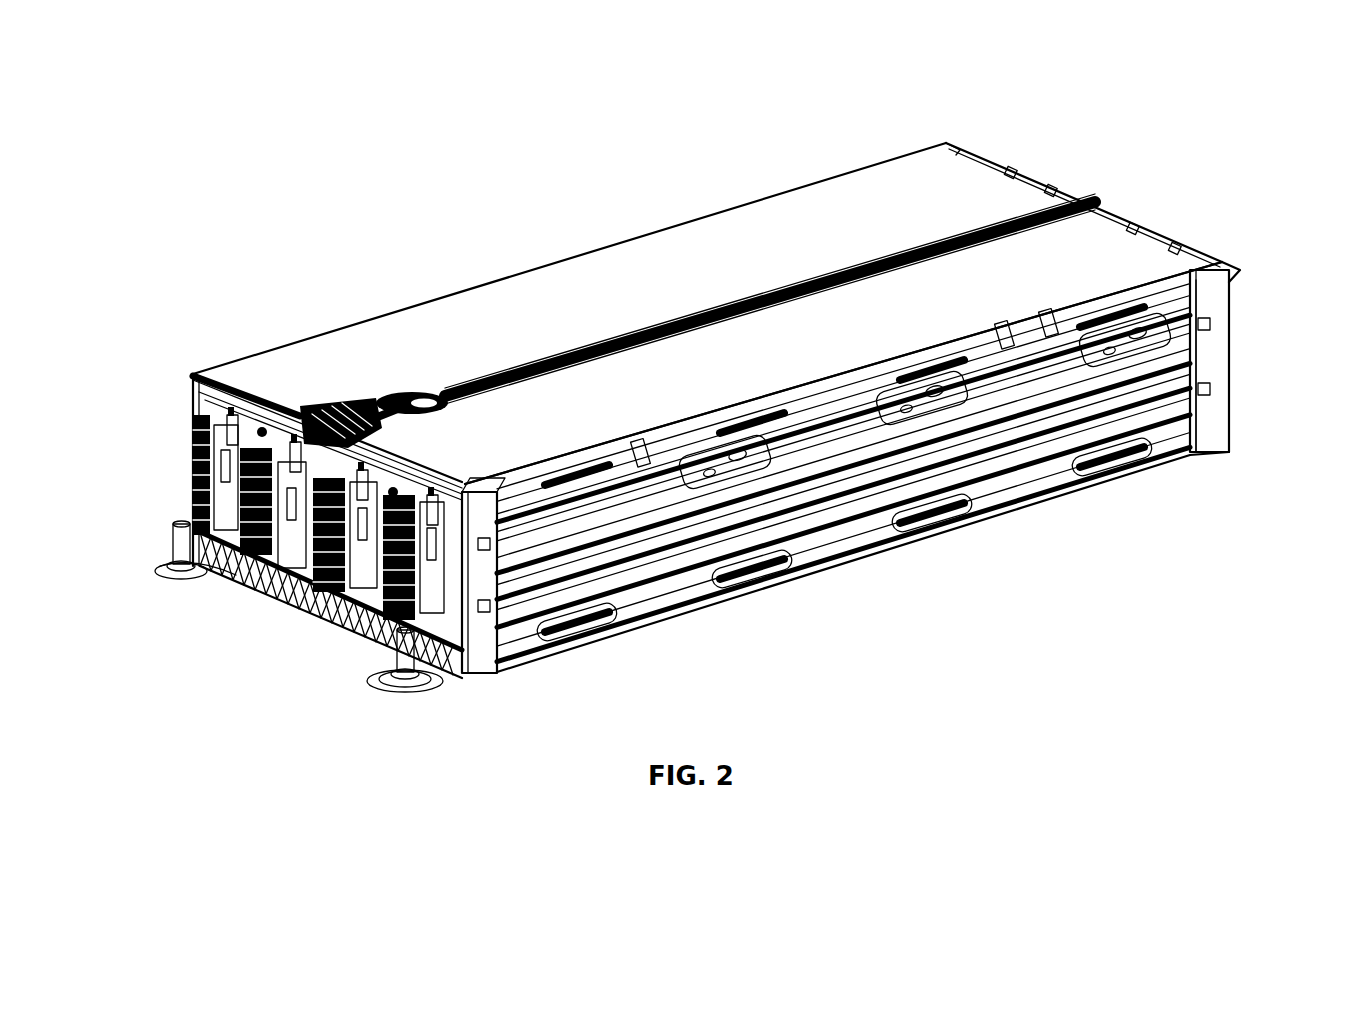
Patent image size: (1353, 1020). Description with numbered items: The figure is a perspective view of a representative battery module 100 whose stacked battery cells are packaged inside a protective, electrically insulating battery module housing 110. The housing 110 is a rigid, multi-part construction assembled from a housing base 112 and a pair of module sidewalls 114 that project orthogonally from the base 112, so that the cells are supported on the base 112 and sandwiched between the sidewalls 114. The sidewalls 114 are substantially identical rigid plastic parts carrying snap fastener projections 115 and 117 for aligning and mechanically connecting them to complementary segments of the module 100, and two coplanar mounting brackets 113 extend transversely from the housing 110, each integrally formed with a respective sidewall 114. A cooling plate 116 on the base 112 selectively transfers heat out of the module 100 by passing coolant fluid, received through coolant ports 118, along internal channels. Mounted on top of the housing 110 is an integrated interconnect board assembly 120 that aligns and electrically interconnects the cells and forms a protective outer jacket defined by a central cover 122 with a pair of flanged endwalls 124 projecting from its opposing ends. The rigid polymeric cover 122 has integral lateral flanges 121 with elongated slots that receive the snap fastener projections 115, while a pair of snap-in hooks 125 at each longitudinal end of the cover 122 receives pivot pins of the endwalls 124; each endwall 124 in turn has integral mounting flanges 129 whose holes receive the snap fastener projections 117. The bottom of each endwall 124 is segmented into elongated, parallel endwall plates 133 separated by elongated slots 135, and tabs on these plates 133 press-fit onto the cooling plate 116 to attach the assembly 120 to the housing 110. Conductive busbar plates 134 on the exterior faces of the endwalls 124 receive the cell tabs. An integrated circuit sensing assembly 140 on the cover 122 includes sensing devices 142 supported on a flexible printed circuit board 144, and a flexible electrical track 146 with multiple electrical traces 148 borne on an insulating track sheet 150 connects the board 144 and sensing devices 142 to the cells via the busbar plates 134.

The battery module 100 is at (302, 124).
The battery module housing 110 is at (1165, 530).
The housing base 112 is at (790, 567).
The mounting brackets 113 is at (1205, 290).
The module sidewalls 114 is at (1190, 455).
The snap fastener projections 115 is at (1100, 468).
The cooling plate 116 is at (385, 692).
The snap fastener projections 117 is at (1213, 385).
The coolant ports 118 is at (170, 545).
The integrated interconnect board (ICB) assembly 120 is at (612, 216).
The lateral flanges 121 is at (657, 490).
The central cover 122 is at (848, 200).
The flanged endwalls 124 is at (995, 165).
The snap-in hooks 125 is at (225, 408).
The mounting flanges 129 is at (1213, 340).
The endwall plates 133 is at (255, 562).
The busbar plates 134 is at (292, 412).
The elongated slots 135 is at (238, 555).
The integrated circuit (IC) sensing assembly 140 is at (355, 332).
The sensing devices 142 is at (448, 400).
The flexible printed circuit board (PCB) 144 is at (395, 390).
The flexible electrical track 146 is at (795, 265).
The electrical traces 148 is at (815, 270).
The track sheet 150 is at (755, 290).